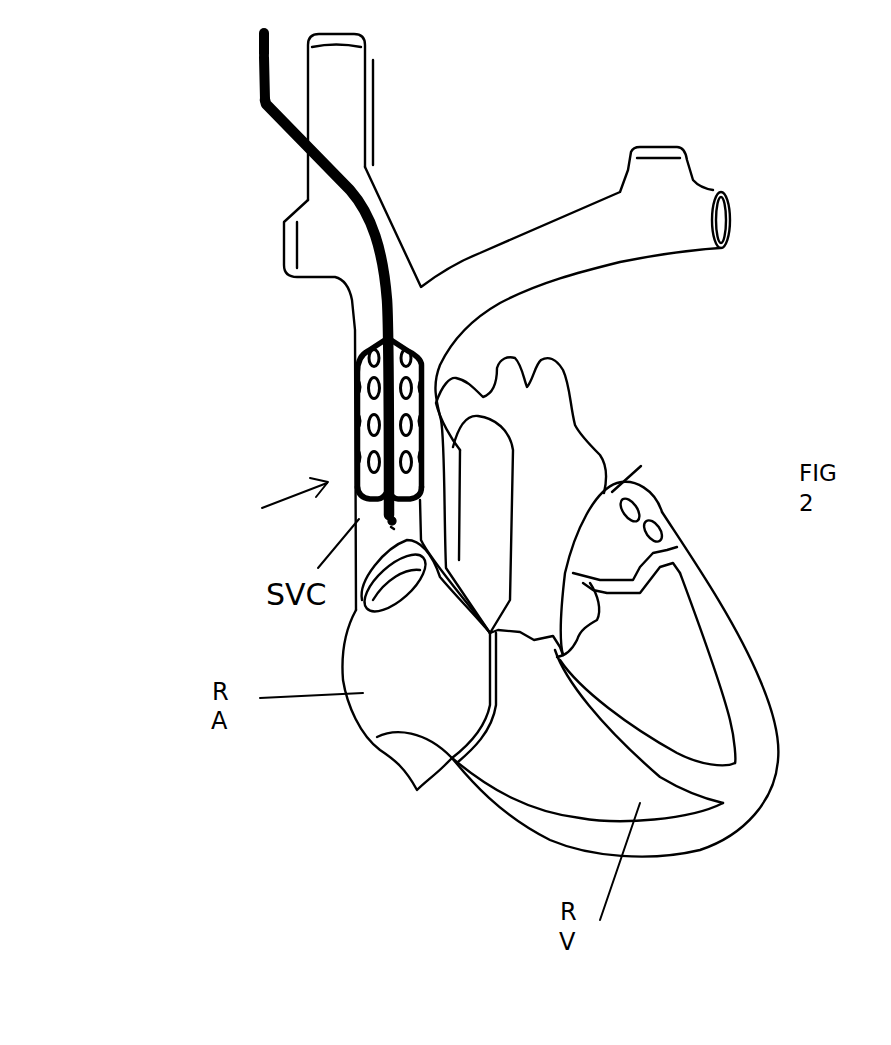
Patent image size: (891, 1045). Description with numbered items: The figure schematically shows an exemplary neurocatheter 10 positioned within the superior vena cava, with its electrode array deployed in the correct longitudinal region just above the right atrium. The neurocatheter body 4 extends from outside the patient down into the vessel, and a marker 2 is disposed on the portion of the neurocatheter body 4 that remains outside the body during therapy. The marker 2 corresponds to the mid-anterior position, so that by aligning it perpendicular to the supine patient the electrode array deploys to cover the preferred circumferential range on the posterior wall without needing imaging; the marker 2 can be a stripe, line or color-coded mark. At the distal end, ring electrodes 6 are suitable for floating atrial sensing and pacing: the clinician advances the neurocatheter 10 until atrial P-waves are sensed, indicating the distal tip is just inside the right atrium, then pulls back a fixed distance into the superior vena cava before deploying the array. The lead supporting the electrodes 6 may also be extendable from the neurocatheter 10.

The marker 2 is at (262, 60).
The neurocatheter body 4 is at (357, 192).
The ring electrodes 6 is at (402, 520).
The neurocatheter 10 is at (260, 338).